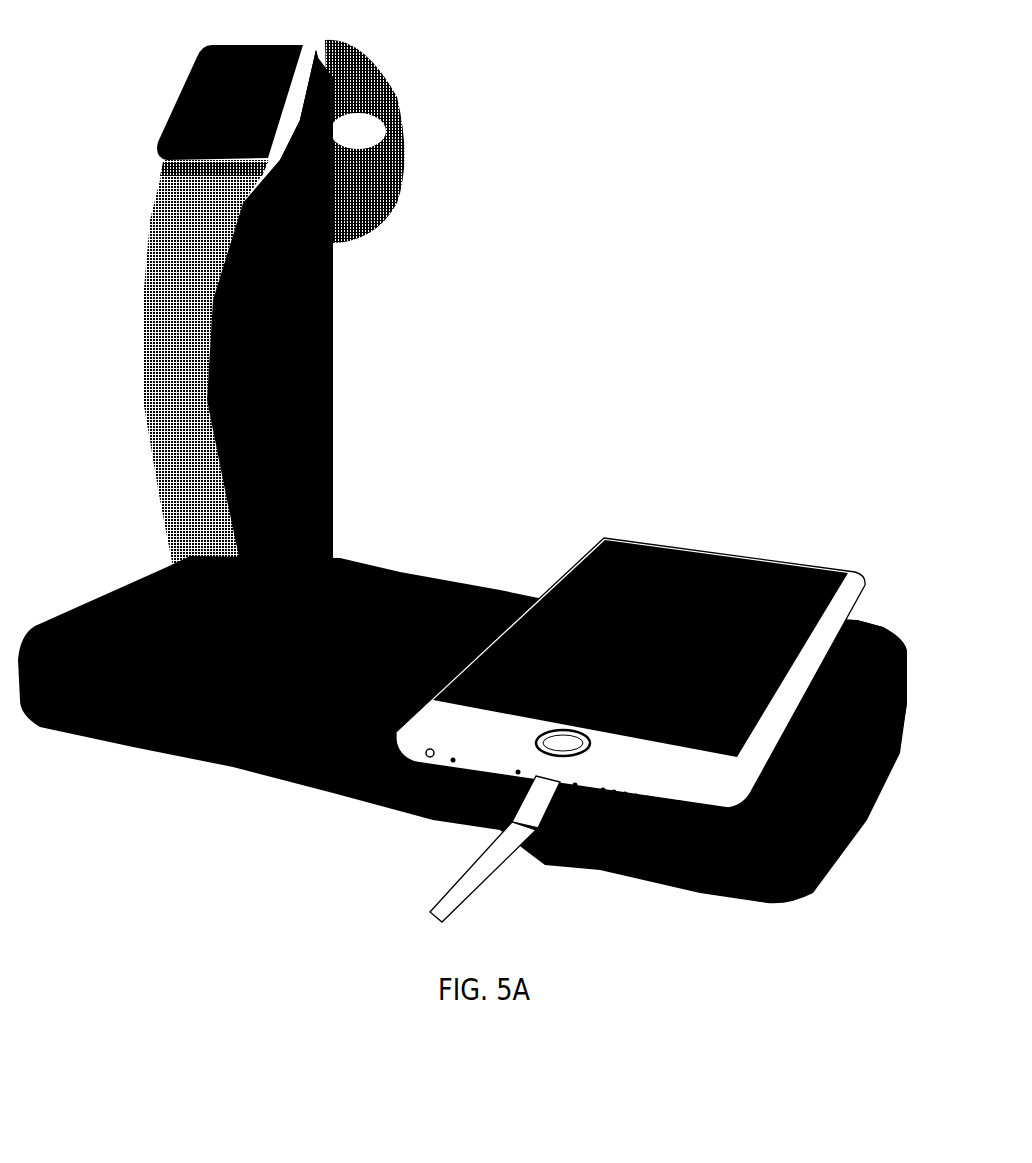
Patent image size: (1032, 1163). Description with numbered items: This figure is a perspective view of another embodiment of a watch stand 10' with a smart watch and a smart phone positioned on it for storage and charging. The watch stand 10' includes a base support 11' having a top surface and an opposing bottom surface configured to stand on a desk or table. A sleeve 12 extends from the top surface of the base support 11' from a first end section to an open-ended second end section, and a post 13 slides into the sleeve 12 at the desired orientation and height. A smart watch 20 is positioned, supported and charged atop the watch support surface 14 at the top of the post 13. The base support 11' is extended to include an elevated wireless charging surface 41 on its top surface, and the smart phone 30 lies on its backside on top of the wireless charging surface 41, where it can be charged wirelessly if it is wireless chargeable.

The watch stand 10' is at (477, 481).
The base support 11' is at (462, 679).
The sleeve 12 is at (305, 390).
The post 13 is at (310, 173).
The watch support surface 14 is at (323, 123).
The smart watch 20 is at (177, 102).
The smart phone 30 is at (760, 555).
The wireless charging surface 41 is at (867, 627).